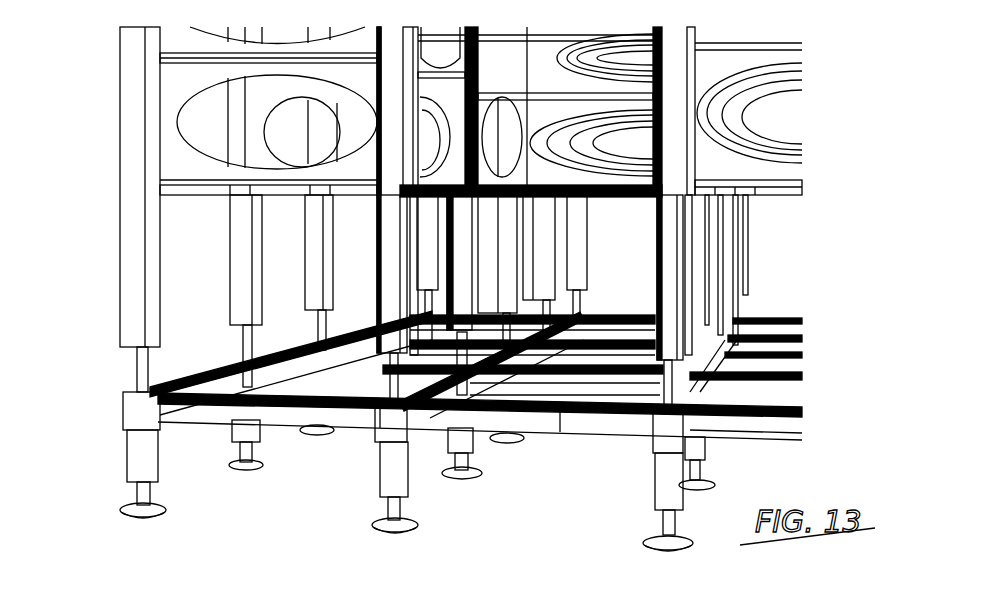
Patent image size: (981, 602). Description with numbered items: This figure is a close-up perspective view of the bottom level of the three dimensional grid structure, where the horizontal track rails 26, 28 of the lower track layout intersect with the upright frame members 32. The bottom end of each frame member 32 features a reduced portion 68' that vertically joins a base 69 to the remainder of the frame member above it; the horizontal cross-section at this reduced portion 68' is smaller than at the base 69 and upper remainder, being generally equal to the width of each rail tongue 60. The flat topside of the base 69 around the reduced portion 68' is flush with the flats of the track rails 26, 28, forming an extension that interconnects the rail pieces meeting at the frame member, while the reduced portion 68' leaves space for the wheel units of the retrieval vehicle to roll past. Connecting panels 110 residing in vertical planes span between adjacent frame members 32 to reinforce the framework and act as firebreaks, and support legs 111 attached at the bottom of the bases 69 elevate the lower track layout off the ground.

The connecting panel 110 is at (190, 160).
The frame member 32 is at (135, 258).
The track rail 28 is at (215, 372).
The track rail 26 is at (606, 320).
The rail tongue 60 is at (765, 405).
The reduced portion 68' is at (362, 426).
The base 69 is at (133, 408).
The support leg 111 is at (140, 460).